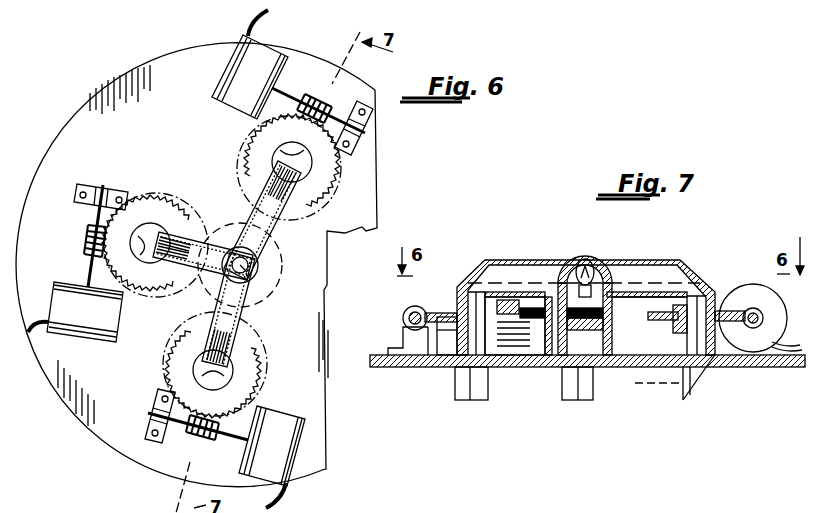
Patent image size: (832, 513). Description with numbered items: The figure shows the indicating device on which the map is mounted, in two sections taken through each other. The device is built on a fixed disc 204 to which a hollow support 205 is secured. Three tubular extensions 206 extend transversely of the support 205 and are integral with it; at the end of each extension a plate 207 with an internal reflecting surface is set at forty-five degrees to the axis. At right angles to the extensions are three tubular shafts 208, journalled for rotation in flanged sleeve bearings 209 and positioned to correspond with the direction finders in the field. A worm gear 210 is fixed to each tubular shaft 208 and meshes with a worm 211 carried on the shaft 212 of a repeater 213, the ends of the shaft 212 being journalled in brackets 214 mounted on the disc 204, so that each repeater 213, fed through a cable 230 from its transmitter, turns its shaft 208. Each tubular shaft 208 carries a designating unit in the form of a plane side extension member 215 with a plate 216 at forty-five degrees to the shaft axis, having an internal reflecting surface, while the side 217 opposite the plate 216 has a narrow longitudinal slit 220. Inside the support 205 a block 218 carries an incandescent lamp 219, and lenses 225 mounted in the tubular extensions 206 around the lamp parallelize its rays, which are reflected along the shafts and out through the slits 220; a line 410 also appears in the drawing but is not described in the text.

In FIG. 6, the fixed disc 204 is at (100, 437).
In FIG. 7, the fixed disc 204 is at (384, 362).
In FIG. 6, the hollow support 205 is at (259, 259).
In FIG. 7, the hollow support 205 is at (603, 338).
In FIG. 6, the tubular extension 206 is at (241, 322).
In FIG. 7, the tubular extension 206 is at (517, 262).
In FIG. 6, the plate 207 is at (277, 148).
In FIG. 7, the plate 207 is at (458, 287).
In FIG. 6, the tubular shaft 208 is at (314, 194).
In FIG. 7, the tubular shaft 208 is at (456, 298).
In FIG. 6, the flanged sleeve bearing 209 is at (309, 171).
In FIG. 7, the flanged sleeve bearing 209 is at (445, 335).
In FIG. 6, the worm gear 210 is at (316, 206).
In FIG. 7, the worm gear 210 is at (440, 310).
In FIG. 6, the worm 211 is at (319, 106).
In FIG. 7, the worm 211 is at (405, 318).
In FIG. 6, the shaft 212 is at (297, 99).
In FIG. 7, the shaft 212 is at (404, 327).
In FIG. 6, the repeater 213 is at (176, 260).
In FIG. 7, the repeater 213 is at (511, 310).
In FIG. 6, the bracket 214 is at (366, 127).
In FIG. 7, the plane side extension member 215 is at (457, 396).
In FIG. 7, the plate 216 is at (696, 388).
In FIG. 7, the side 217 is at (681, 398).
In FIG. 7, the block 218 is at (611, 320).
In FIG. 6, the incandescent lamp 219 is at (252, 270).
In FIG. 7, the incandescent lamp 219 is at (574, 283).
In FIG. 7, the narrow longitudinal slit 220 is at (471, 393).
In FIG. 6, the lens 225 is at (281, 236).
In FIG. 7, the lens 225 is at (557, 257).
In FIG. 6, the cable 230 is at (258, 22).
In FIG. 7, the base line 410 is at (640, 384).